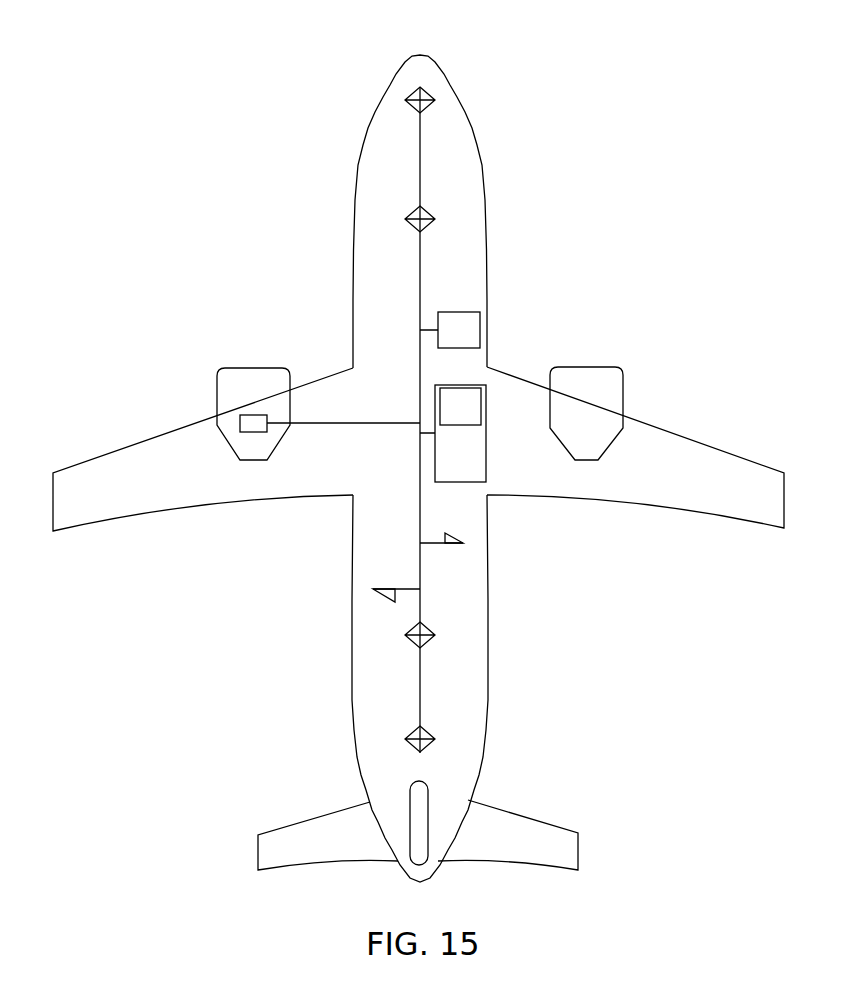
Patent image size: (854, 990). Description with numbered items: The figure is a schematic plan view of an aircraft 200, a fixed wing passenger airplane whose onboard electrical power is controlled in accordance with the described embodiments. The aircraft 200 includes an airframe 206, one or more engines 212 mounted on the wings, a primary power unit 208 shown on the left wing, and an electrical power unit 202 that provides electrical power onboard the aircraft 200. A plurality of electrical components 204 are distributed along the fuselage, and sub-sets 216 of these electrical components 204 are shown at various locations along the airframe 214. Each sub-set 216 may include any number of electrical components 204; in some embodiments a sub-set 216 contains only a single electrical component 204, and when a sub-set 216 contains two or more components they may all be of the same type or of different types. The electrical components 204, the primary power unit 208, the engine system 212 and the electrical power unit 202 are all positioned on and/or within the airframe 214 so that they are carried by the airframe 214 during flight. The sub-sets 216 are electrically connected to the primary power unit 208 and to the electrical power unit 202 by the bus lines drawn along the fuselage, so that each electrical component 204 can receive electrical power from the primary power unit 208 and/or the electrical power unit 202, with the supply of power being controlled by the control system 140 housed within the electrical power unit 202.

The aircraft 200 is at (652, 50).
The electrical power unit 202 is at (472, 383).
The electrical components 204 is at (428, 87).
The airframe 206 is at (490, 618).
The primary power unit 208 is at (240, 423).
The engines 212 is at (217, 385).
The airframe 214 is at (352, 555).
The sub-sets of electrical components 216 is at (437, 92).
The control system 140 is at (460, 406).